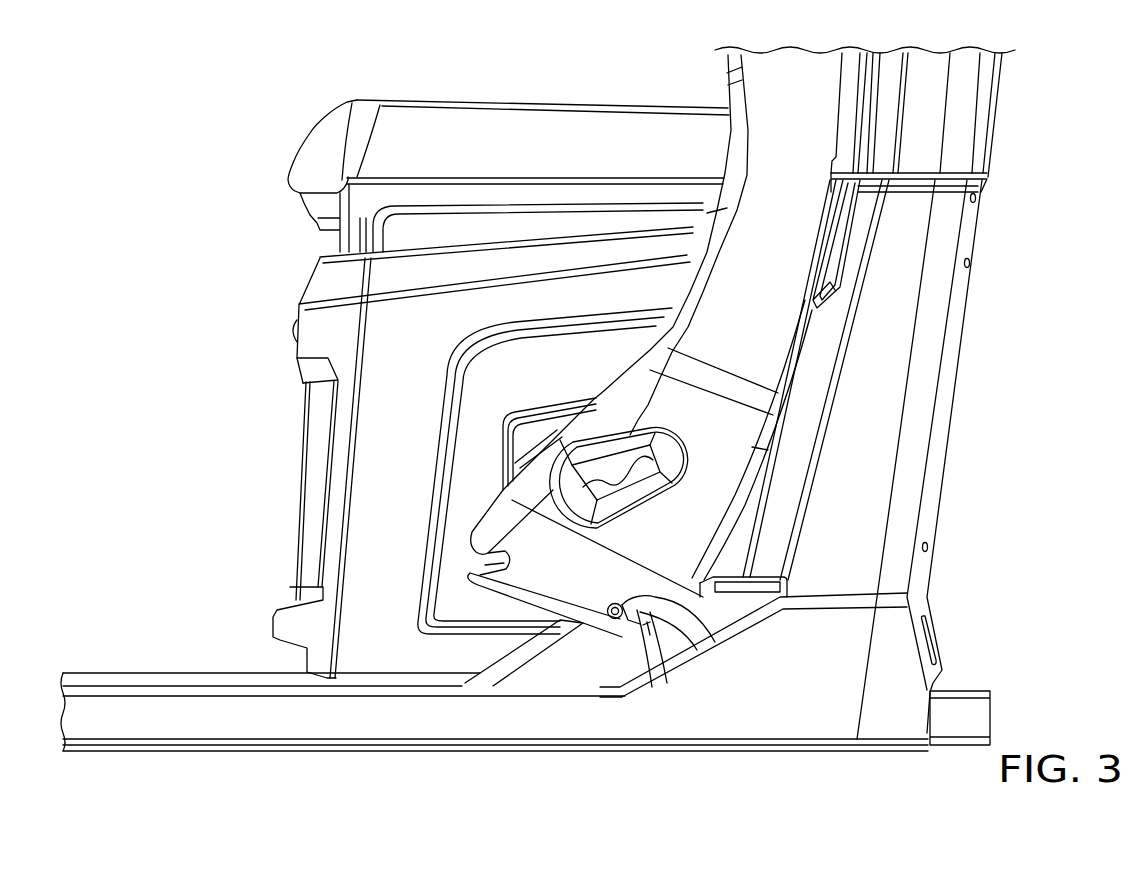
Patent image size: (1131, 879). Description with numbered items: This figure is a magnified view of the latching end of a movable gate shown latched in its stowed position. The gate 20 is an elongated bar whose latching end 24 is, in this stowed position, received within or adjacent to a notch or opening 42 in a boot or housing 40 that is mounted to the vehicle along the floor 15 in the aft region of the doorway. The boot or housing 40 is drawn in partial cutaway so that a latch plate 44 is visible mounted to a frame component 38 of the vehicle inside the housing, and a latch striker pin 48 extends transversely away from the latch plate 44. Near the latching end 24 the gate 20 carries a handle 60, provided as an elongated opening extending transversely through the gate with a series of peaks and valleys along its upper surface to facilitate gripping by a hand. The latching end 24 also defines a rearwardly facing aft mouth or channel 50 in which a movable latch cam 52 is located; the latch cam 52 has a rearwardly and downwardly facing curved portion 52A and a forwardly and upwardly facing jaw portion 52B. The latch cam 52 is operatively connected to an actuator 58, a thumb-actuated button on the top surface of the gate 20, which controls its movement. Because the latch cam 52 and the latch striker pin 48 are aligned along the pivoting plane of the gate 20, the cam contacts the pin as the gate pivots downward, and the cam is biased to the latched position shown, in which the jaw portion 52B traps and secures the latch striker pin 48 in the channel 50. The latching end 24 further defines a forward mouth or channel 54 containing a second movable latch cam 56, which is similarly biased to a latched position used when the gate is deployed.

The floor 15 is at (163, 677).
The gate 20 is at (729, 130).
The latching end 24 is at (515, 604).
The frame component 38 is at (667, 660).
The boot or housing 40 is at (763, 577).
The notch or opening 42 is at (700, 612).
The latch plate 44 is at (641, 633).
The latch striker pin 48 is at (608, 608).
The aft mouth or channel 50 is at (680, 636).
The latch cam 52 is at (633, 603).
The curved portion 52A is at (655, 650).
The jaw portion 52B is at (630, 606).
The forward mouth or channel 54 is at (480, 546).
The latch cam 56 is at (477, 576).
The actuator 58 is at (530, 467).
The handle 60 is at (642, 470).